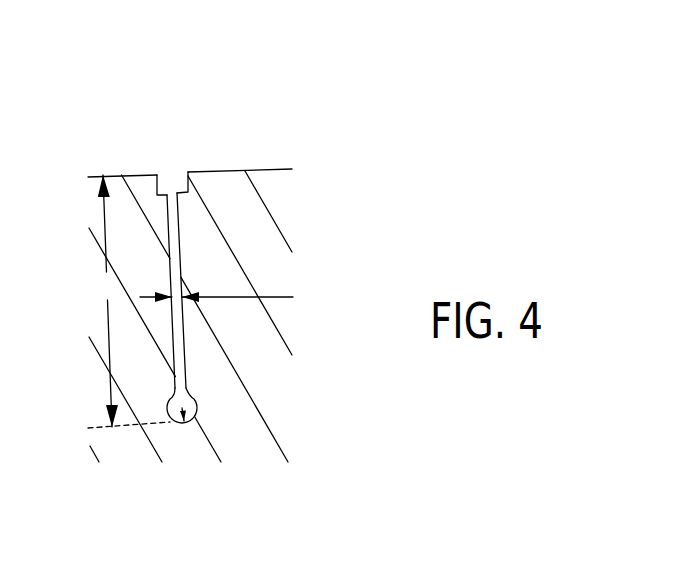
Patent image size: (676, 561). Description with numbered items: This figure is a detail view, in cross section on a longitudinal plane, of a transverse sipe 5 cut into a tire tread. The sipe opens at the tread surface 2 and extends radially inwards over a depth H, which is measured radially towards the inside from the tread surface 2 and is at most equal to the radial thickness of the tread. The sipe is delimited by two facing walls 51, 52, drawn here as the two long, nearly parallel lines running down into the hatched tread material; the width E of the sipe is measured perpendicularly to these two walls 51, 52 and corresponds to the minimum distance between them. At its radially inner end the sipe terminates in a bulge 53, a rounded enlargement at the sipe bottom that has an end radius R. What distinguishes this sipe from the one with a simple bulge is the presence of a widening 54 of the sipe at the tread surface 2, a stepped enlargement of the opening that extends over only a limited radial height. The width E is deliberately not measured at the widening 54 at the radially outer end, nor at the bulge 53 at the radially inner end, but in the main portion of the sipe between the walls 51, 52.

The tread surface 2 is at (266, 160).
The transverse sipe 5 is at (194, 259).
The wall 51 is at (160, 221).
The wall 52 is at (190, 249).
The bulge 53 is at (205, 409).
The widening 54 is at (178, 185).
The depth H is at (127, 301).
The width E is at (216, 283).
The end radius R is at (188, 431).